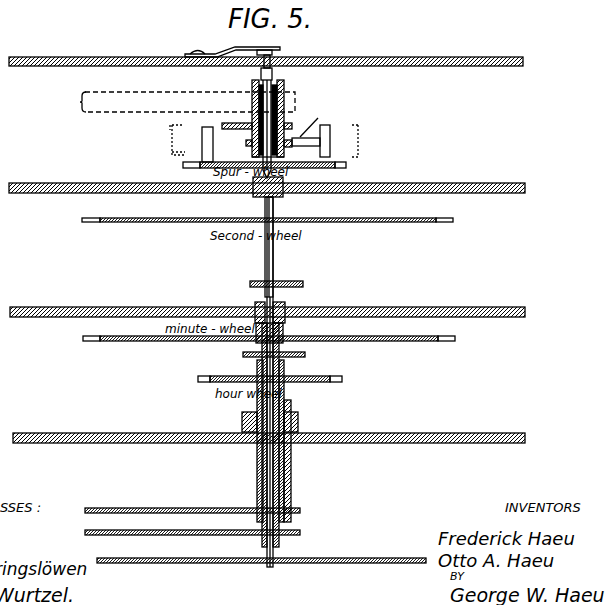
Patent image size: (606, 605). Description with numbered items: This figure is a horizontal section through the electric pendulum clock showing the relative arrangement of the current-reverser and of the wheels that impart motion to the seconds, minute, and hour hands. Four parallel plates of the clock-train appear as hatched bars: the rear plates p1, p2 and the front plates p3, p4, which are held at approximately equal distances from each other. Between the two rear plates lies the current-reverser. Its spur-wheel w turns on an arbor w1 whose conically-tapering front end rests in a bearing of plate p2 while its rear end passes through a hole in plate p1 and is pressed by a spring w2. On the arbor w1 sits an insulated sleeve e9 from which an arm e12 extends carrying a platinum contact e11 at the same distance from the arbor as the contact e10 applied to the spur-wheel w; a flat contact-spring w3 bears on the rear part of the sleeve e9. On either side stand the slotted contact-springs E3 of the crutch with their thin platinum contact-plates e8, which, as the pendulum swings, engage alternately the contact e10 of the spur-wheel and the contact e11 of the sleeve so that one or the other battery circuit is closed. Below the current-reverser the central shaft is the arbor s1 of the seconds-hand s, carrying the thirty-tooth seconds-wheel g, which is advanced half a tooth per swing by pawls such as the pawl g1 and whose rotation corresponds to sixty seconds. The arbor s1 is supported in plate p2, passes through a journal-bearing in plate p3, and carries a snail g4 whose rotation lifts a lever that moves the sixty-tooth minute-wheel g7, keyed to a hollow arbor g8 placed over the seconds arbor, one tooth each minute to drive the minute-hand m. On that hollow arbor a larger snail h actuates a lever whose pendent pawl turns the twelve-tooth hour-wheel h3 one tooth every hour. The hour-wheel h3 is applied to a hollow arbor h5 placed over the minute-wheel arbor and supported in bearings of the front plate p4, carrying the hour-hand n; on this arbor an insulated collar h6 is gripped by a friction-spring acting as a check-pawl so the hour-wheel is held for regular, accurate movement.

The rear plate p1 is at (20, 66).
The second supporting-plate p2 is at (30, 193).
The third supporting-plate p3 is at (28, 317).
The fourth or front plate p4 is at (28, 443).
The spur-wheel w is at (198, 168).
The arbor w1 is at (278, 78).
The spring w2 is at (232, 43).
The flat contact-spring w3 is at (187, 102).
The platinum contact-plates e8 is at (178, 128).
The insulated sleeve e9 is at (279, 114).
The platinum contact e10 is at (222, 143).
The platinum contact e11 is at (320, 131).
The arm e12 is at (312, 117).
The slotted contact-springs E3 is at (267, 141).
The seconds-wheel g is at (118, 224).
The pawl g1 is at (273, 265).
The snail g4 is at (303, 287).
The minute-wheel g7 is at (118, 341).
The hollow arbor g8 is at (243, 355).
The snail h is at (305, 355).
The hour-wheel h3 is at (199, 382).
The hollow arbor h5 is at (291, 462).
The insulated collar h6 is at (298, 425).
The hour-hand n is at (192, 502).
The minute-hand m is at (192, 542).
The seconds-hand s is at (145, 563).
The arbor s1 is at (258, 466).